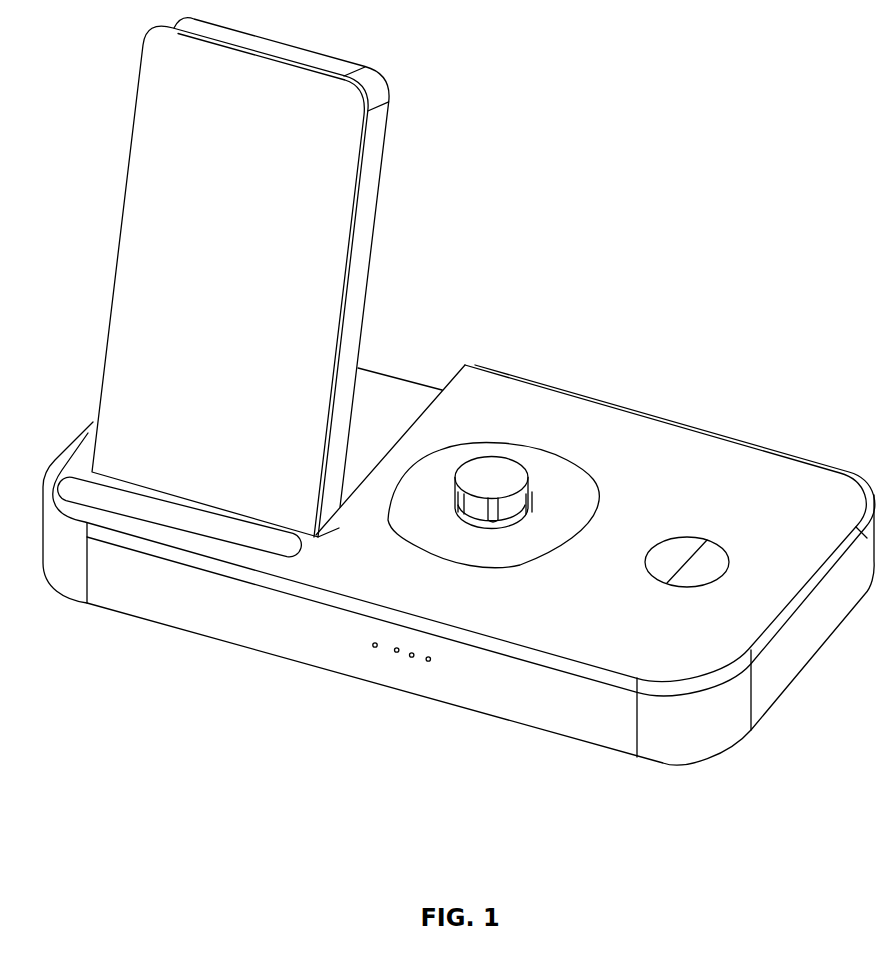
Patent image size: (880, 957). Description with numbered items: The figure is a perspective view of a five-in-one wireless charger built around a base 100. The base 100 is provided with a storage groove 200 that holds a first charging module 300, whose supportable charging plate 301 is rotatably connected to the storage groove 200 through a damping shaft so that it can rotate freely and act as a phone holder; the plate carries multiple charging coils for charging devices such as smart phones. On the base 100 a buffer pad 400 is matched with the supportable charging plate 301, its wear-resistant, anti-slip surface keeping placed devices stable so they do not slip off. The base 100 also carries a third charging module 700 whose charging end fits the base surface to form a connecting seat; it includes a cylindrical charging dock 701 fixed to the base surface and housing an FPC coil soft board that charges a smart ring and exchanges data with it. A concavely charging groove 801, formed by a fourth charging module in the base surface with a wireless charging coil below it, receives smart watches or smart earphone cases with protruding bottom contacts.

The base 100 is at (667, 435).
The storage groove 200 is at (383, 380).
The first charging module 300 is at (212, 94).
The supportable charging plate 301 is at (150, 160).
The buffer pad 400 is at (292, 543).
The third charging module 700 is at (514, 432).
The cylindrical charging dock 701 is at (507, 468).
The concavely charging groove 801 is at (720, 556).